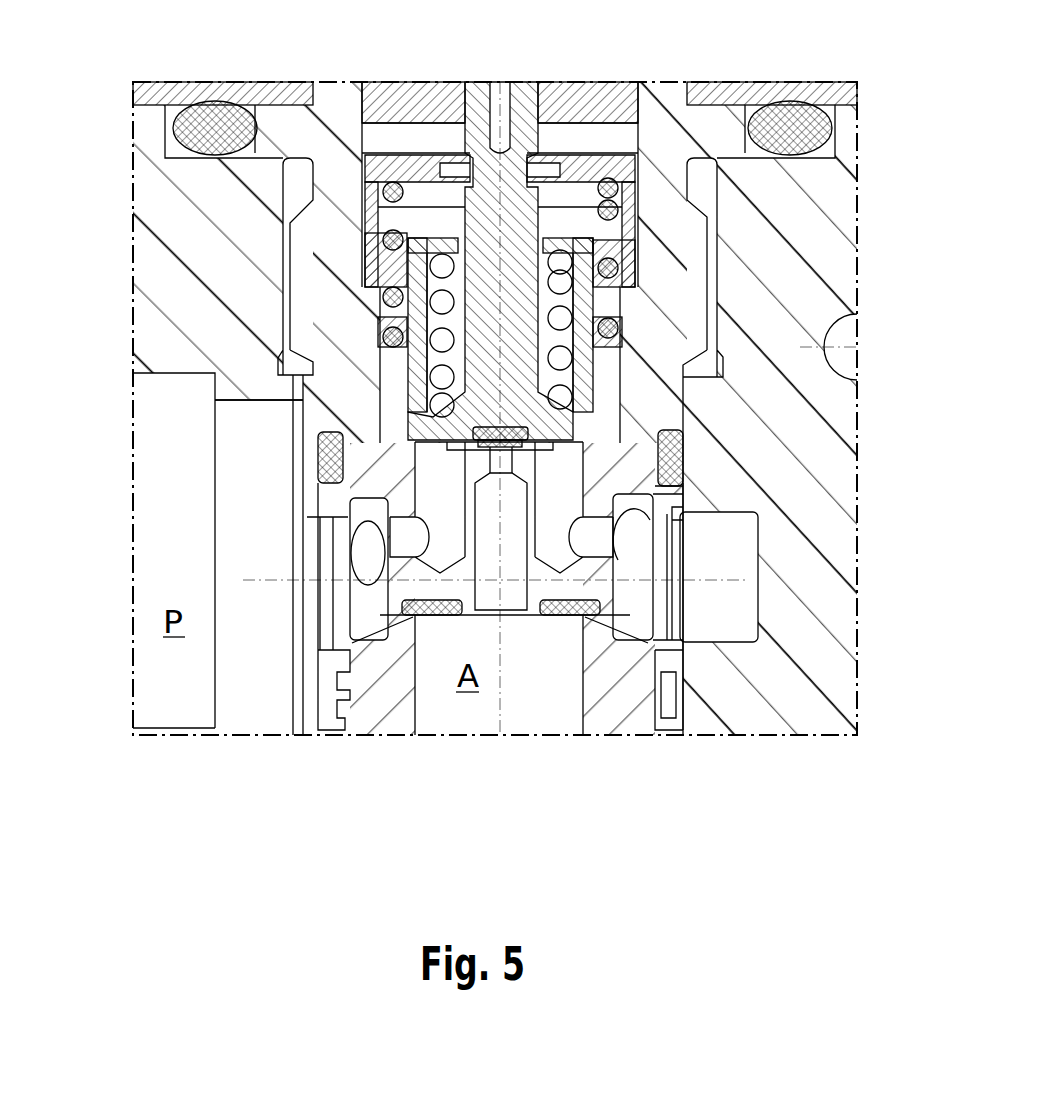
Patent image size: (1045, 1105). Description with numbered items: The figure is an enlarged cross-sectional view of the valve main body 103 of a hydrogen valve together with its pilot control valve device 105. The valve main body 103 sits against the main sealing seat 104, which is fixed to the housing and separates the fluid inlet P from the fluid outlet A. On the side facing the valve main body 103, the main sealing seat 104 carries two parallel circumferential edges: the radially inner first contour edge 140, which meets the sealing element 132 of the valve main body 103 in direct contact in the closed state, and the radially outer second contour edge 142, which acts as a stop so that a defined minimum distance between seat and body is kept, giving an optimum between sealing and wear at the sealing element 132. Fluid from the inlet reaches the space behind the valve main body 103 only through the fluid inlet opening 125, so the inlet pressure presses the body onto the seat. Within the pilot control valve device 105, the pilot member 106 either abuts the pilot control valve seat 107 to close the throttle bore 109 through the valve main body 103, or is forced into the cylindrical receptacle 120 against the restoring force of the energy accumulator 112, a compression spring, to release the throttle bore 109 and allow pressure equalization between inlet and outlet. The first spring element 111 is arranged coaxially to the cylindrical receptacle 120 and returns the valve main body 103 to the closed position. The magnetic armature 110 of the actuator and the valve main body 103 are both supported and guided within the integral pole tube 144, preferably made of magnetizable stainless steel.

The valve main body 103 is at (385, 412).
The main sealing seat 104 is at (383, 683).
The pilot control valve device 105 is at (565, 220).
The pilot member 106 is at (513, 328).
The pilot control valve seat 107 is at (483, 448).
The throttle bore 109 is at (507, 499).
The magnetic armature 110 is at (407, 107).
The first spring element 111 is at (380, 242).
The energy accumulator 112 is at (560, 360).
The cylindrical receptacle 120 is at (577, 243).
The fluid inlet opening 125 is at (405, 545).
The sealing element 132 is at (435, 615).
The first contour edge 140 is at (580, 615).
The second contour edge 142 is at (382, 620).
The pole tube 144 is at (660, 340).